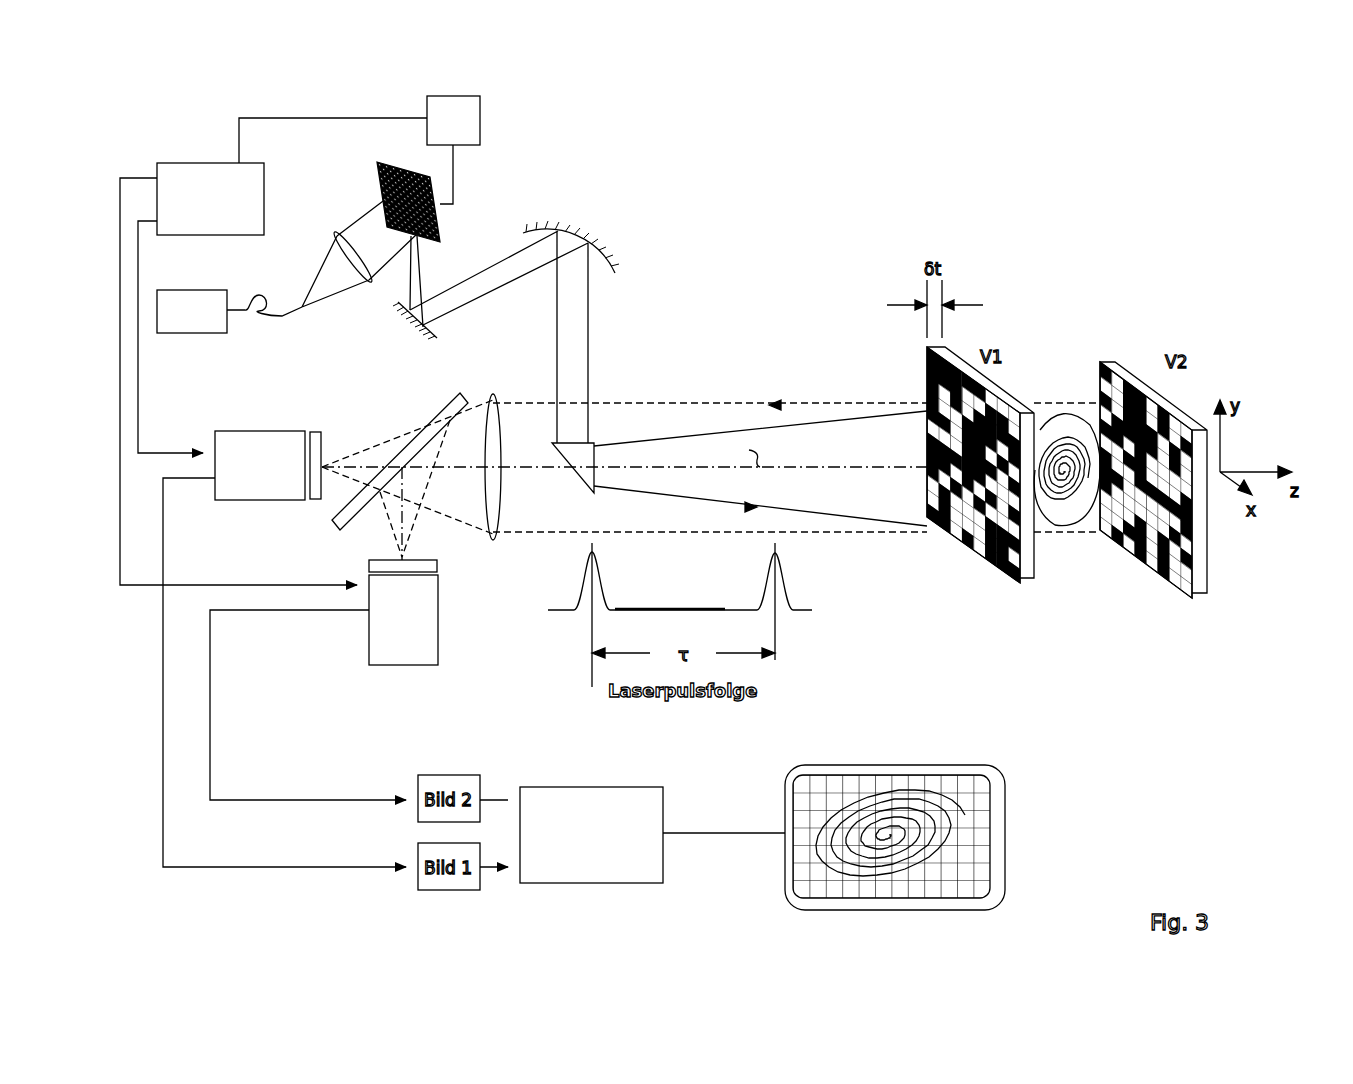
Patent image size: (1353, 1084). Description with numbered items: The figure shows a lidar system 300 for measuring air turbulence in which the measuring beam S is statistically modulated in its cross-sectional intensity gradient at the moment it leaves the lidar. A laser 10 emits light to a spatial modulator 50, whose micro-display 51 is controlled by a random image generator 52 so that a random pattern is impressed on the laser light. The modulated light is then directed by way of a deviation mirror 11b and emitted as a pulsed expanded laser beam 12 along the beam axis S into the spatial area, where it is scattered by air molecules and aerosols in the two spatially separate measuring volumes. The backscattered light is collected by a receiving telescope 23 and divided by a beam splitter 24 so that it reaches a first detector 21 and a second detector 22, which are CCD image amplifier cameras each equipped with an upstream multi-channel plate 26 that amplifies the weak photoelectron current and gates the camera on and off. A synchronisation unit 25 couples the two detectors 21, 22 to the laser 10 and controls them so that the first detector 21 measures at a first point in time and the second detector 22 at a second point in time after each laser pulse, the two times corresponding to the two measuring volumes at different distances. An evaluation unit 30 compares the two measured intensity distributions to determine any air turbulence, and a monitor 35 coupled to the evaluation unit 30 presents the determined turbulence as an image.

The lidar system 300 is at (723, 166).
The laser 10 is at (207, 328).
The deviation mirror 11b is at (583, 475).
The pulsed expanded laser beam 12 is at (880, 453).
The first detector 21 is at (250, 440).
The second detector 22 is at (380, 654).
The receiving telescope 23 is at (497, 415).
The beam splitter 24 is at (433, 417).
The synchronisation unit 25 is at (182, 178).
The multi-channel plate 26 is at (318, 432).
The evaluation unit 30 is at (565, 865).
The monitor 35 is at (912, 788).
The spatial modulator 50 is at (343, 108).
The micro-display 51 is at (438, 223).
The random image generator 52 is at (477, 118).